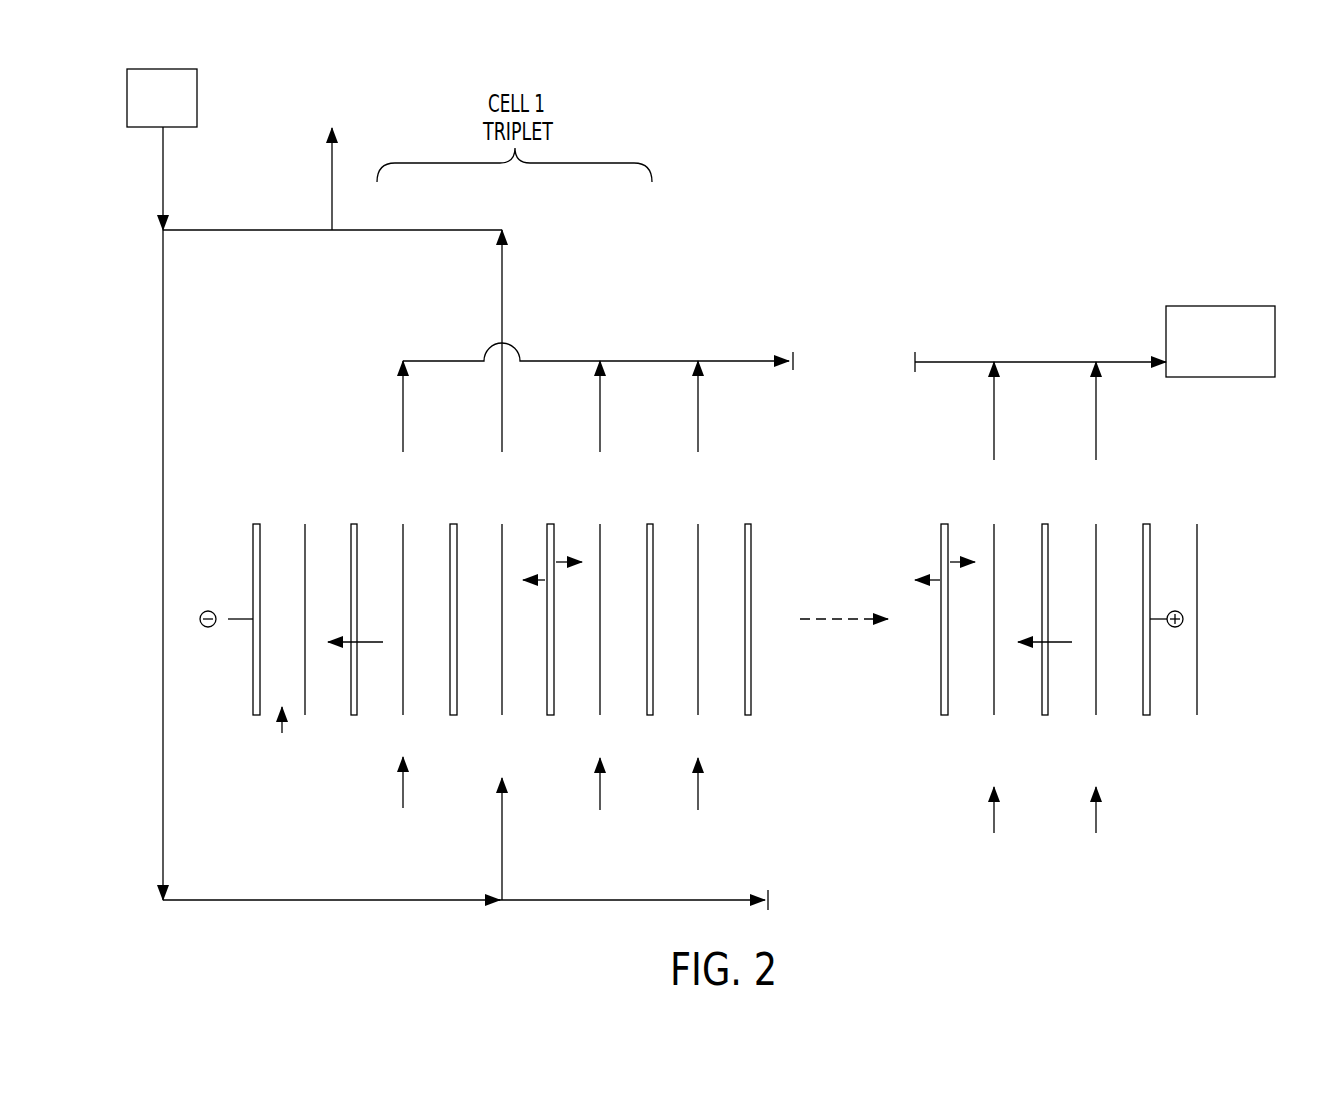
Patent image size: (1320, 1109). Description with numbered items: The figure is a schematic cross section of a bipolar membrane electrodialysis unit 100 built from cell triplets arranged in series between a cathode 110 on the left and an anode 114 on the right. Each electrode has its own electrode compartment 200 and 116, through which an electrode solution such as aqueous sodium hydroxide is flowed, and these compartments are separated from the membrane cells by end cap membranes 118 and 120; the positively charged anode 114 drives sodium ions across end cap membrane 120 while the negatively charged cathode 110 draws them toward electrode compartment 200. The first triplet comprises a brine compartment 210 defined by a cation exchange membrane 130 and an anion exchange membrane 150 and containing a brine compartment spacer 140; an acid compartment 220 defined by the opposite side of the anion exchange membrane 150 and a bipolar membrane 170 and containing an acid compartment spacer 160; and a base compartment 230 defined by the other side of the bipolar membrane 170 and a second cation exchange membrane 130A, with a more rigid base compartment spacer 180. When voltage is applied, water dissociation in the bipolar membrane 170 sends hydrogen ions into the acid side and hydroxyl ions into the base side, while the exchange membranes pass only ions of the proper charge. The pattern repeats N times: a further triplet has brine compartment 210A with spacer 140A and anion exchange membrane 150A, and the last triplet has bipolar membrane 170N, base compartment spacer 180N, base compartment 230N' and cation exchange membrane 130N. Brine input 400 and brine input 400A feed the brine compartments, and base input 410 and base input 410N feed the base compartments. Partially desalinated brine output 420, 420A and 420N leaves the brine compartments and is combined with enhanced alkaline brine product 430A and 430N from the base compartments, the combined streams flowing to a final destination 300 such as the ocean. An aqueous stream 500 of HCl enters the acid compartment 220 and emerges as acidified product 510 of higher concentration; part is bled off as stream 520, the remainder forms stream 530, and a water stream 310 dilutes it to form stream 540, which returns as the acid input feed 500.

The electrodialysis unit 100 is at (1042, 182).
The cathode 110 is at (248, 540).
The anode 114 is at (1155, 545).
The electrode compartment 116 is at (1120, 725).
The end cap membrane 118 is at (300, 540).
The end cap membrane 120 is at (1100, 545).
The cation exchange membrane 130 is at (346, 540).
The cation exchange membrane 130A is at (658, 540).
The cation exchange membrane 130N is at (1055, 545).
The brine compartment spacer 140 is at (398, 530).
The brine compartment spacer 140A is at (697, 543).
The anion exchange membrane 150 is at (440, 542).
The anion exchange membrane 150A is at (762, 543).
The acid compartment spacer 160 is at (498, 543).
The bipolar membrane 170 is at (550, 542).
The bipolar membrane 170N is at (938, 532).
The base compartment spacer 180 is at (597, 525).
The base compartment spacer 180N is at (990, 537).
The electrode compartment 200 is at (267, 700).
The brine compartment 210 is at (403, 725).
The brine compartment 210A is at (698, 725).
The acid compartment 220 is at (502, 725).
The base compartment 230 is at (600, 725).
The base compartment 230N' is at (962, 768).
The final destination 300 is at (1235, 361).
The water stream 310 is at (176, 118).
The brine input 400 is at (398, 800).
The brine input 400A is at (705, 795).
The base input 410 is at (605, 800).
The base input 410N is at (985, 820).
The partially desalinated brine output 420 is at (410, 408).
The partially desalinated brine output 420A is at (705, 388).
The partially desalinated brine output 420N is at (1102, 423).
The enhanced alkaline brine product 430A is at (605, 398).
The enhanced alkaline brine product 430N is at (1000, 423).
The aqueous stream 500 is at (510, 805).
The acidified product 510 is at (513, 320).
The bleed off stream 520 is at (322, 182).
The stream 530 is at (270, 238).
The stream 540 is at (175, 373).